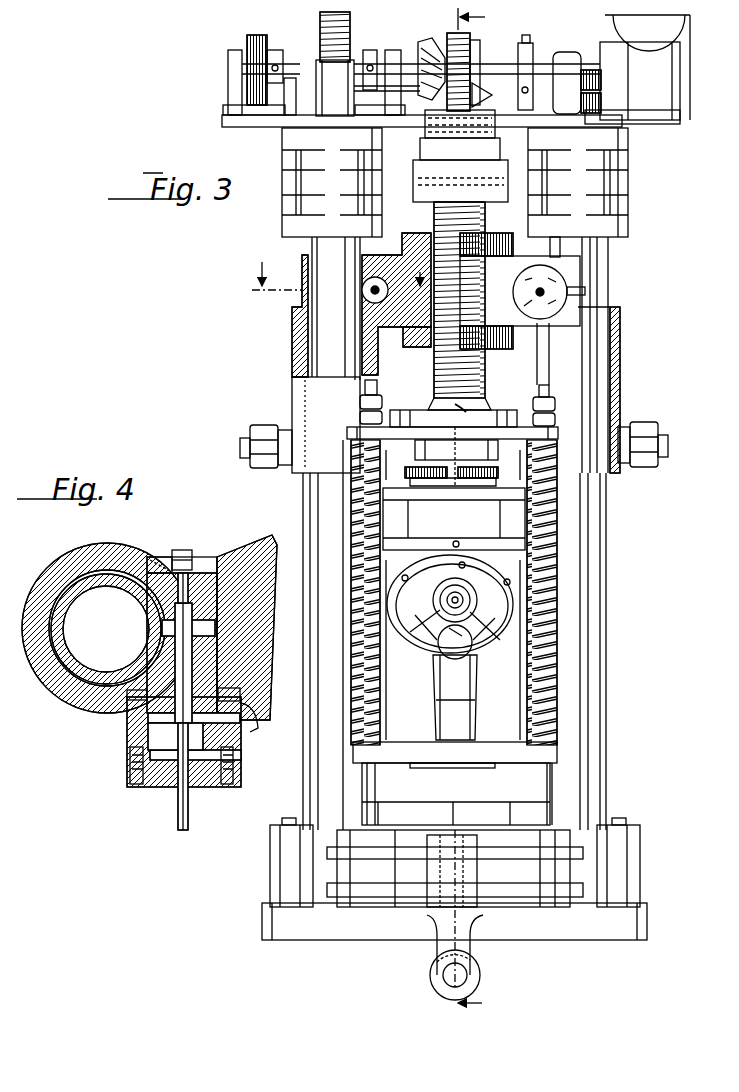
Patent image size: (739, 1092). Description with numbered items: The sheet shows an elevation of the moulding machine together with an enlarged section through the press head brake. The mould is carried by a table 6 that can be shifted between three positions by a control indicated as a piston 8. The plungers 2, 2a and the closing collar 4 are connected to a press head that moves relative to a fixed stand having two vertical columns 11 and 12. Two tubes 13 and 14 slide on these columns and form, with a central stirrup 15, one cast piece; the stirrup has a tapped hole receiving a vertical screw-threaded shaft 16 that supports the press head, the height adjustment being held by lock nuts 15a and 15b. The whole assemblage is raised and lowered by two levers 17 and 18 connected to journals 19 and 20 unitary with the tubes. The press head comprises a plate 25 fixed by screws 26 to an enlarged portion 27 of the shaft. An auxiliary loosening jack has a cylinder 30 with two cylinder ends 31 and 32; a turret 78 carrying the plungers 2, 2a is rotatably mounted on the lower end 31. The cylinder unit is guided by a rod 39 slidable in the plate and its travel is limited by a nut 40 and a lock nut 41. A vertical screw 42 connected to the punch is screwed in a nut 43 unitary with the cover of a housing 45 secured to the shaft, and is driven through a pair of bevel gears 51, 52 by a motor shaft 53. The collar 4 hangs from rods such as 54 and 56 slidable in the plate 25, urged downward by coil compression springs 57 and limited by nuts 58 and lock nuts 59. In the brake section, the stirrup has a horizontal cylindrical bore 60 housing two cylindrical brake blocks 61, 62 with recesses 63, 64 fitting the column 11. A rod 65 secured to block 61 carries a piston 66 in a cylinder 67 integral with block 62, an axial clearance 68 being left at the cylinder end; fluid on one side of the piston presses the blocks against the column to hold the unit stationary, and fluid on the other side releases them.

In FIG. 3, the plunger 2 is at (476, 689).
In FIG. 3, the plunger 2a is at (444, 606).
In FIG. 3, the closing collar 4 is at (427, 765).
In FIG. 3, the table 6 is at (368, 905).
In FIG. 3, the piston 8 is at (432, 968).
In FIG. 3, the vertical column 11 is at (305, 522).
In FIG. 4, the vertical column 11 is at (78, 668).
In FIG. 3, the vertical column 12 is at (598, 583).
In FIG. 3, the tube 13 is at (292, 350).
In FIG. 4, the tube 13 is at (236, 557).
In FIG. 3, the tube 14 is at (620, 341).
In FIG. 3, the central stirrup 15 is at (478, 302).
In FIG. 3, the lock nut 15a is at (500, 233).
In FIG. 3, the lock nut 15b is at (500, 349).
In FIG. 3, the screw-threaded shaft 16 is at (434, 374).
In FIG. 3, the lever 17 is at (262, 425).
In FIG. 3, the lever 18 is at (641, 422).
In FIG. 3, the journal 19 is at (246, 440).
In FIG. 3, the journal 20 is at (667, 460).
In FIG. 3, the plate 25 is at (397, 440).
In FIG. 3, the screw 26 is at (464, 413).
In FIG. 3, the enlarged portion 27 is at (400, 412).
In FIG. 3, the cylinder 30 is at (466, 525).
In FIG. 3, the cylinder end 31 is at (496, 538).
In FIG. 3, the cylinder end 32 is at (396, 492).
In FIG. 3, the rod 39 is at (455, 454).
In FIG. 3, the nut 40 is at (498, 476).
In FIG. 3, the lock nut 41 is at (472, 52).
In FIG. 3, the vertical screw 42 is at (470, 36).
In FIG. 3, the nut 43 is at (450, 138).
In FIG. 3, the housing 45 is at (416, 162).
In FIG. 3, the bevel gear 51 is at (518, 66).
In FIG. 3, the bevel gear 52 is at (425, 44).
In FIG. 3, the shaft 53 is at (500, 62).
In FIG. 3, the rod 54 is at (558, 557).
In FIG. 3, the rod 56 is at (353, 530).
In FIG. 3, the coil compression spring 57 is at (352, 592).
In FIG. 3, the nut 58 is at (360, 418).
In FIG. 3, the lock nut 59 is at (364, 406).
In FIG. 3, the horizontal cylindrical bore 60 is at (380, 278).
In FIG. 4, the horizontal cylindrical bore 60 is at (155, 556).
In FIG. 4, the brake block 61 is at (206, 565).
In FIG. 4, the brake block 62 is at (208, 644).
In FIG. 4, the cylindrical recess 63 is at (150, 609).
In FIG. 4, the cylindrical recess 64 is at (150, 652).
In FIG. 3, the rod 65 is at (362, 294).
In FIG. 4, the rod 65 is at (190, 680).
In FIG. 4, the piston 66 is at (150, 744).
In FIG. 3, the cylinder 67 is at (524, 299).
In FIG. 4, the cylinder 67 is at (152, 786).
In FIG. 4, the axial clearance 68 is at (127, 695).
In FIG. 3, the turret 78 is at (468, 630).